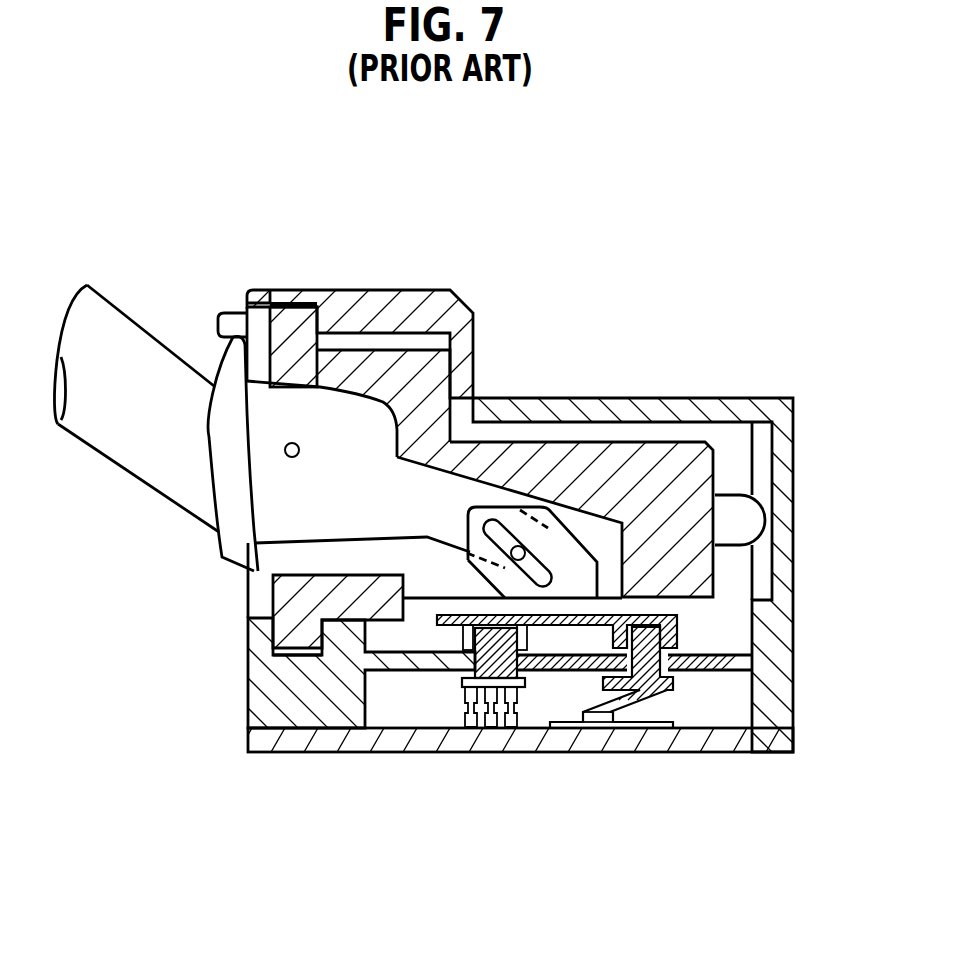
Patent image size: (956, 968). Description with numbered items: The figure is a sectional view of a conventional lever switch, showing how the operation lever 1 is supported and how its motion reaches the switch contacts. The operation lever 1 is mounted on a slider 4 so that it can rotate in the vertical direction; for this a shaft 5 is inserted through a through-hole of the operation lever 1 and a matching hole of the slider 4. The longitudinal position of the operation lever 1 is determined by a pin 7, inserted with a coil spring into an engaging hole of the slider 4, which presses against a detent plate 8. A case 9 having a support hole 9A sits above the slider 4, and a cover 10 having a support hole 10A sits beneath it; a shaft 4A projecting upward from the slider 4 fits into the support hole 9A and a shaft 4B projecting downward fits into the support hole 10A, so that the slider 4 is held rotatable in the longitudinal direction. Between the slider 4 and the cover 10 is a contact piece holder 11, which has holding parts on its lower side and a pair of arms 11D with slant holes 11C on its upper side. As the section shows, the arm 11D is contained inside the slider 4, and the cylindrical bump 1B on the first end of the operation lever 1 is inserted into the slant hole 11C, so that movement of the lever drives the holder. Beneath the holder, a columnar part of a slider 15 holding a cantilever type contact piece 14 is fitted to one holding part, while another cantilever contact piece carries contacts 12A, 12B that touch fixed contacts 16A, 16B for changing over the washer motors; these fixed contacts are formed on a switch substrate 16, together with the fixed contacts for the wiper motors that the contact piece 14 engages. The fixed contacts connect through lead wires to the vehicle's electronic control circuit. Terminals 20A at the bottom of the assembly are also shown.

The operation lever 1 is at (123, 295).
The cylindrical bump 1B is at (521, 546).
The slider 4 is at (580, 460).
The shaft projecting to the upper side 4A is at (300, 330).
The shaft projecting to the lower side 4B is at (283, 595).
The shaft 5 is at (285, 452).
The pin 7 is at (730, 508).
The detent plate 8 is at (788, 397).
The case 9 is at (387, 310).
The support hole 9A is at (280, 298).
The cover 10 is at (278, 688).
The support hole 10A is at (272, 655).
The contact piece holder 11 is at (657, 597).
The slant hole 11C is at (492, 530).
The arm 11D is at (567, 563).
The contact 12A is at (588, 735).
The contact 12B is at (538, 735).
The contact piece 14 is at (570, 888).
The slider 15 is at (397, 753).
The switch substrate 16 is at (253, 753).
The fixed contact 16A is at (663, 753).
The fixed contact 16B is at (652, 793).
The terminal pins 20A is at (471, 694).